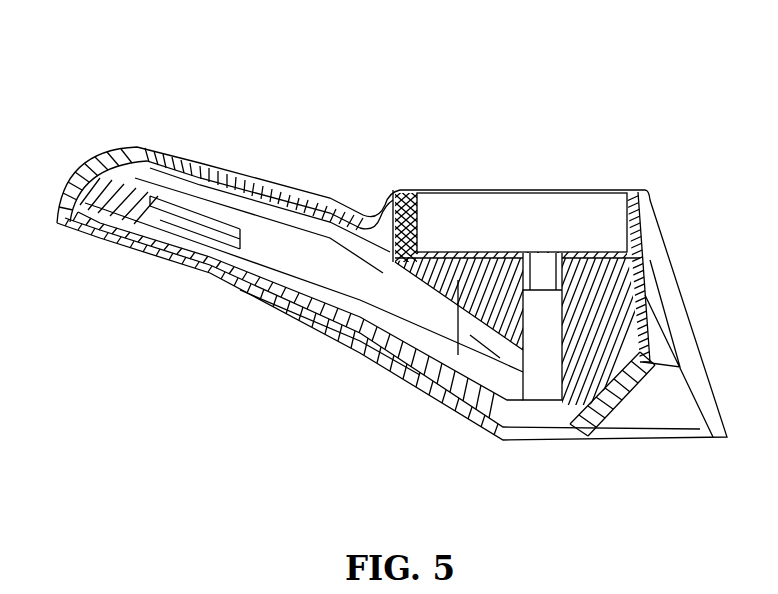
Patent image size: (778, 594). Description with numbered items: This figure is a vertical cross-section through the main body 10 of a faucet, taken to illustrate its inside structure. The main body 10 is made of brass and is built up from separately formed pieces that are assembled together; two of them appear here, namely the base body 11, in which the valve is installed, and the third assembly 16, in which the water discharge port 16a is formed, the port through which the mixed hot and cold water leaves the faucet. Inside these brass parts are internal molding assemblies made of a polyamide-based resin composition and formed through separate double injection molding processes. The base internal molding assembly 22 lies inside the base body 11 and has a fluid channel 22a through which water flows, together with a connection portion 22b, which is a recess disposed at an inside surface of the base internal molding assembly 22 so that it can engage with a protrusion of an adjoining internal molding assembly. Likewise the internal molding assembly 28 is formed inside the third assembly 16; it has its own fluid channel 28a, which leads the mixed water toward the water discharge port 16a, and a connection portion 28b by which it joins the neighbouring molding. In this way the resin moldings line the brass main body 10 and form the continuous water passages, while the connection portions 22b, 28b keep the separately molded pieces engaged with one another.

The main body 10 is at (372, 57).
The base body 11 is at (645, 227).
The third assembly 16 is at (202, 158).
The water discharge port 16a is at (137, 253).
The base internal molding assembly 22 is at (645, 287).
The fluid channel 22a is at (550, 355).
The connection portion 22b is at (352, 352).
The internal molding assembly 28 is at (233, 283).
The fluid channel 28a is at (293, 250).
The connection portion 28b is at (313, 328).